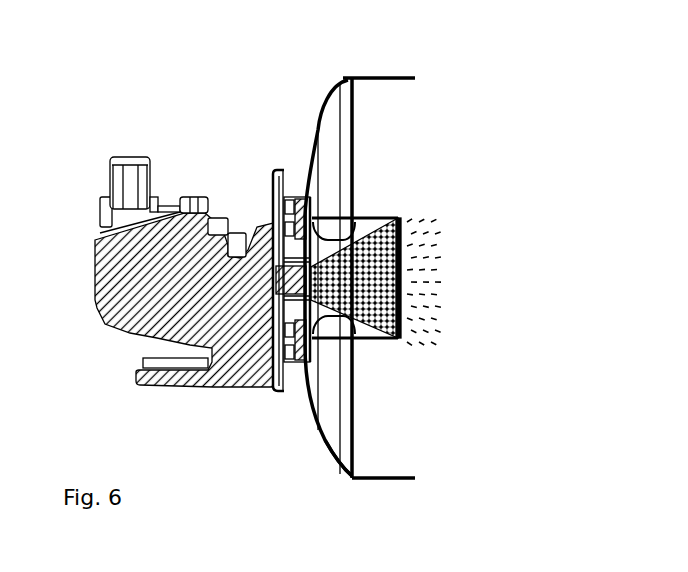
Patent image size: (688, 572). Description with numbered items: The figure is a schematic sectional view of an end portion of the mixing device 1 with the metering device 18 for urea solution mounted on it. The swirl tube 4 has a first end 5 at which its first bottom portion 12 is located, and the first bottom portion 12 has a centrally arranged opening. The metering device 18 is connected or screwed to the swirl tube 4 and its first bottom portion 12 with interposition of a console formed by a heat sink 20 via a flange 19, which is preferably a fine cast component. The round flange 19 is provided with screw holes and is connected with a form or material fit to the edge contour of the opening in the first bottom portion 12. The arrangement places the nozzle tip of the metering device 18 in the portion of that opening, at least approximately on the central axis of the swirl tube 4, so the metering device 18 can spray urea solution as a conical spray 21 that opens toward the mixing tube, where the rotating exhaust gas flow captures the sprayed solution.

The mixing device 1 is at (154, 90).
The swirl tube 4 is at (363, 76).
The first end 5 is at (306, 86).
The first bottom portion 12 is at (348, 476).
The metering device 18 is at (123, 332).
The flange 19 is at (287, 390).
The heat sink 20 is at (272, 168).
The conical spray 21 is at (452, 223).